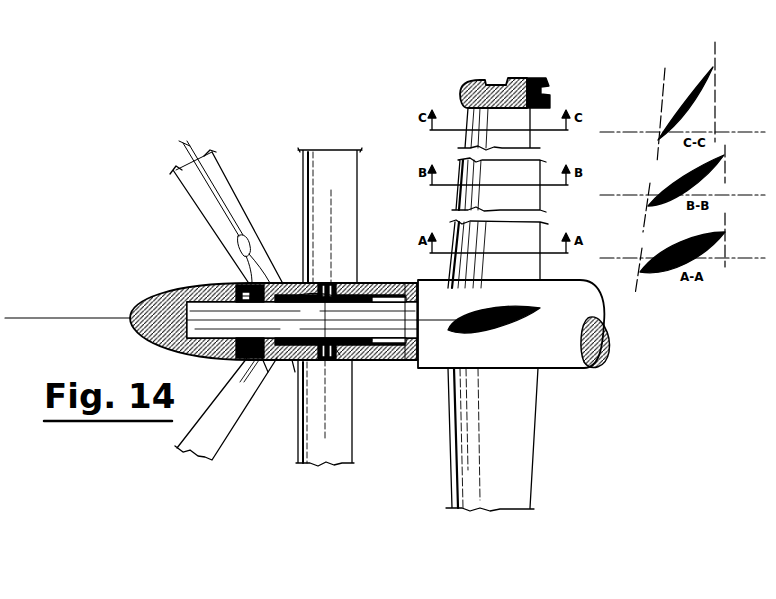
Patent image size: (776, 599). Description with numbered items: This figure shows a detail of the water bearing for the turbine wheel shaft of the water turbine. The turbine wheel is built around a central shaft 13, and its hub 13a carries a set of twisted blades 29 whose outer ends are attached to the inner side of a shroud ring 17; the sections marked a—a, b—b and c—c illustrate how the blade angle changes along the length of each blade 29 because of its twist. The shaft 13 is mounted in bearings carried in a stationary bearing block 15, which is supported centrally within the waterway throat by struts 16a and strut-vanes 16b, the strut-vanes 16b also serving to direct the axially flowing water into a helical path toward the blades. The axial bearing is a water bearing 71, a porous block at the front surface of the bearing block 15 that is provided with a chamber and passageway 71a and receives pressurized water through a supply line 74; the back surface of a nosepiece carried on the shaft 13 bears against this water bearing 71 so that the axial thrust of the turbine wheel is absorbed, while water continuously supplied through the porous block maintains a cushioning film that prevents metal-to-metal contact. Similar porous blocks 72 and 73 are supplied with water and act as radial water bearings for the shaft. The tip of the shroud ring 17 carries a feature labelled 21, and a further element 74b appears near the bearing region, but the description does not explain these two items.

The central shaft 13 is at (218, 300).
The hub 13a is at (446, 370).
The bearing block 15 is at (292, 384).
The struts 16a is at (222, 186).
The strut-vanes 16b is at (303, 205).
The shroud ring 17 is at (462, 85).
The tip cap notch 21 is at (497, 82).
The blades 29 is at (458, 162).
The water bearing 71 is at (246, 285).
The chamber and passageway 71a is at (357, 300).
The porous block 72 is at (291, 365).
The porous block 73 is at (398, 360).
The line 74 is at (224, 201).
The spar attachment 74b is at (338, 352).